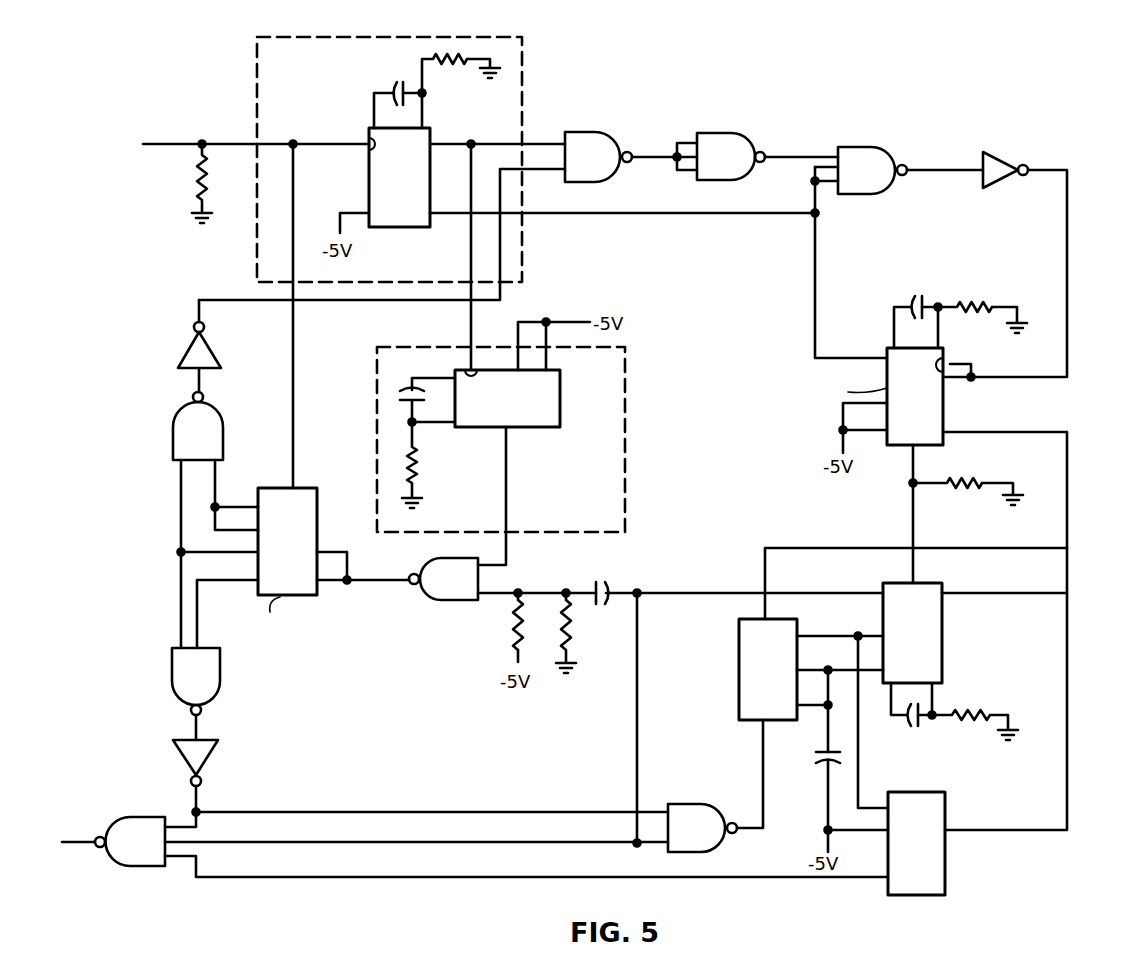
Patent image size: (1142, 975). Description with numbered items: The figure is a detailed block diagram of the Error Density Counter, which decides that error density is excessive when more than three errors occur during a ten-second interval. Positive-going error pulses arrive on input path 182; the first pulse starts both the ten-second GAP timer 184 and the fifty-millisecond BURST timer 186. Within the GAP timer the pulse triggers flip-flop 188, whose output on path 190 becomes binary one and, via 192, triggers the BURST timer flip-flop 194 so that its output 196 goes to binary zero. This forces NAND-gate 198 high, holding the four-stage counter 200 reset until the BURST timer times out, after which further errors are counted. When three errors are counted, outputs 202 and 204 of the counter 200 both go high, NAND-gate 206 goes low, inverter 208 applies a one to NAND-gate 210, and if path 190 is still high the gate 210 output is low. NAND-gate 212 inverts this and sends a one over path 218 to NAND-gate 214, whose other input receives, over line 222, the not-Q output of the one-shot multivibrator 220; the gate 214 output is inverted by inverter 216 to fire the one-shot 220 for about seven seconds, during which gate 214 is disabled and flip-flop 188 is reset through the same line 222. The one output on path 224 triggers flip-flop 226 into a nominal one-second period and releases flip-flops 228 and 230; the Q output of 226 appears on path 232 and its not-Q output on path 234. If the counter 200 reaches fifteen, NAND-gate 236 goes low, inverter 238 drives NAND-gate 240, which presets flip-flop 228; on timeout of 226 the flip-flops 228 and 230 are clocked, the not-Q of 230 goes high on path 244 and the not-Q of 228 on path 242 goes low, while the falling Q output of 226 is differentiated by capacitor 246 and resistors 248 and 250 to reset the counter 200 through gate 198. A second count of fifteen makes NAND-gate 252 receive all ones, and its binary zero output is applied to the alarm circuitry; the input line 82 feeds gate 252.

The input line 82 is at (71, 841).
The input path 182 is at (148, 143).
The GAP timer 184 is at (317, 75).
The BURST timer 186 is at (588, 510).
The flip-flop 188 is at (369, 177).
The path 190 is at (470, 141).
The path 192 is at (470, 325).
The BURST timer flip-flop 194 is at (560, 398).
The output 196 is at (506, 458).
The NAND-gate 198 is at (418, 600).
The four-stage counter 200 is at (305, 488).
The output of counter 202 is at (215, 522).
The output of counter 204 is at (181, 556).
The NAND-gate 206 is at (173, 434).
The inverter 208 is at (185, 340).
The NAND-gate 210 is at (606, 132).
The NAND-gate 212 is at (735, 133).
The NAND-gate 214 is at (880, 147).
The inverter 216 is at (1005, 152).
The path 218 is at (800, 156).
The one-shot multivibrator 220 is at (943, 398).
The connection line 222 is at (815, 322).
The path 224 is at (1067, 473).
The flip-flop 226 is at (942, 638).
The flip-flop 228 is at (739, 665).
The flip-flop 230 is at (945, 873).
The path 232 is at (820, 593).
The path 234 is at (836, 636).
The NAND-gate 236 is at (172, 672).
The inverter 238 is at (180, 758).
The NAND-gate 240 is at (690, 804).
The path 242 is at (821, 670).
The path 244 is at (258, 878).
The capacitor 246 is at (599, 584).
The resistor 248 is at (571, 634).
The resistor 250 is at (512, 634).
The NAND-gate 252 is at (128, 866).